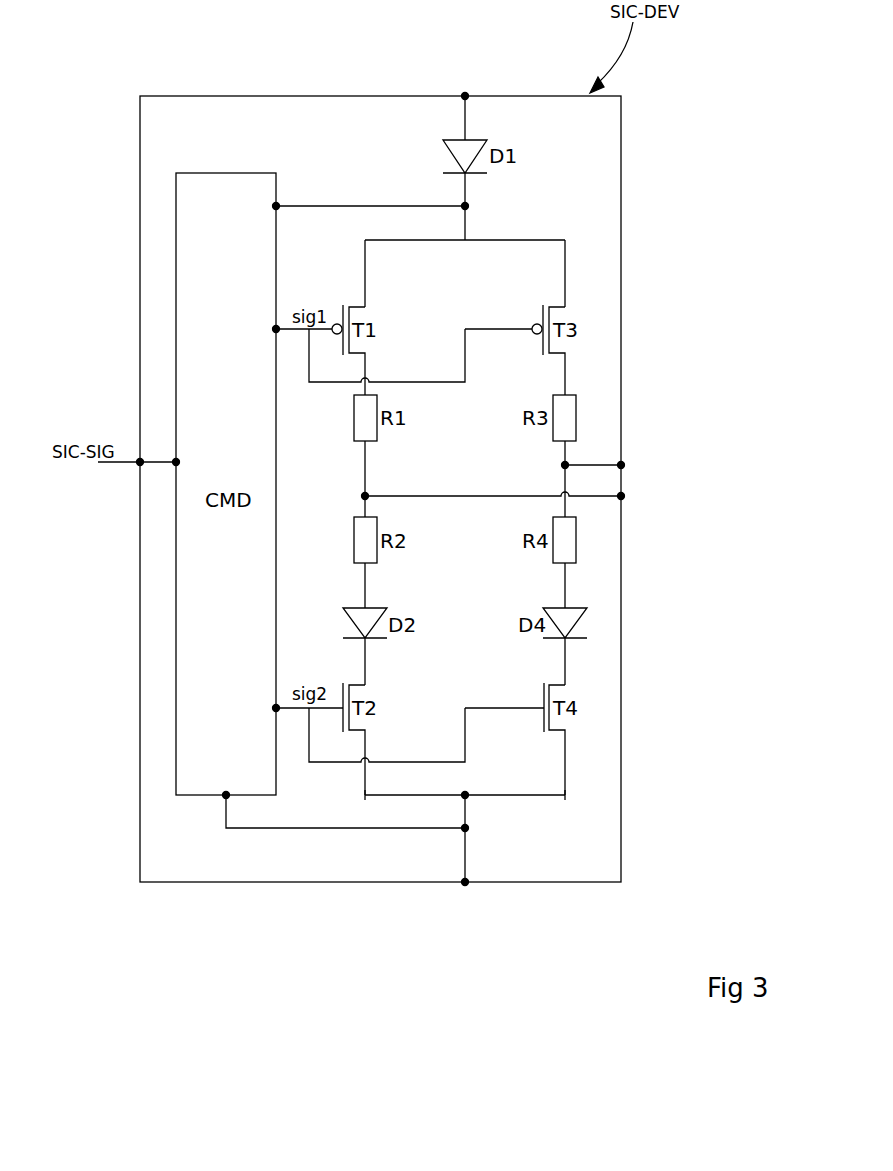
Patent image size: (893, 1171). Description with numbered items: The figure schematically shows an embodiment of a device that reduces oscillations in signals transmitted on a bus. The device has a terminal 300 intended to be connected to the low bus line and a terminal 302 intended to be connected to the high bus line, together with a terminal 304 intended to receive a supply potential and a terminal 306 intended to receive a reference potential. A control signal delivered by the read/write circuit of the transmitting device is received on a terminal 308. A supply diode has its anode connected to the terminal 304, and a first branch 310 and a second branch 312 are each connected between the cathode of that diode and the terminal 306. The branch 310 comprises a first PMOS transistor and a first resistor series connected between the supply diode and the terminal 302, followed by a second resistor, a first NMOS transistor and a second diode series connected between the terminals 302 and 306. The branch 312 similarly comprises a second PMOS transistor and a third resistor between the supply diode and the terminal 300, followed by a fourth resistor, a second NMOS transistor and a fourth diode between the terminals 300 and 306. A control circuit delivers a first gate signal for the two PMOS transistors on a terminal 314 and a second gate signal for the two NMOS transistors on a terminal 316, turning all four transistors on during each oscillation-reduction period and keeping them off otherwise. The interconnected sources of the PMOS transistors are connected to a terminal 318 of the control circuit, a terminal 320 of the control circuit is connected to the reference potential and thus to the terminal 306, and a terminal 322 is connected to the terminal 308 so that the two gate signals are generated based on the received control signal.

The terminal 300 is at (622, 465).
The terminal 302 is at (622, 496).
The terminal 304 is at (465, 95).
The terminal 306 is at (465, 883).
The terminal 308 is at (139, 463).
The first branch 310 is at (365, 797).
The second branch 312 is at (566, 797).
The terminal 314 is at (275, 329).
The terminal 316 is at (275, 707).
The terminal 318 is at (277, 205).
The terminal 320 is at (226, 794).
The terminal 322 is at (177, 461).